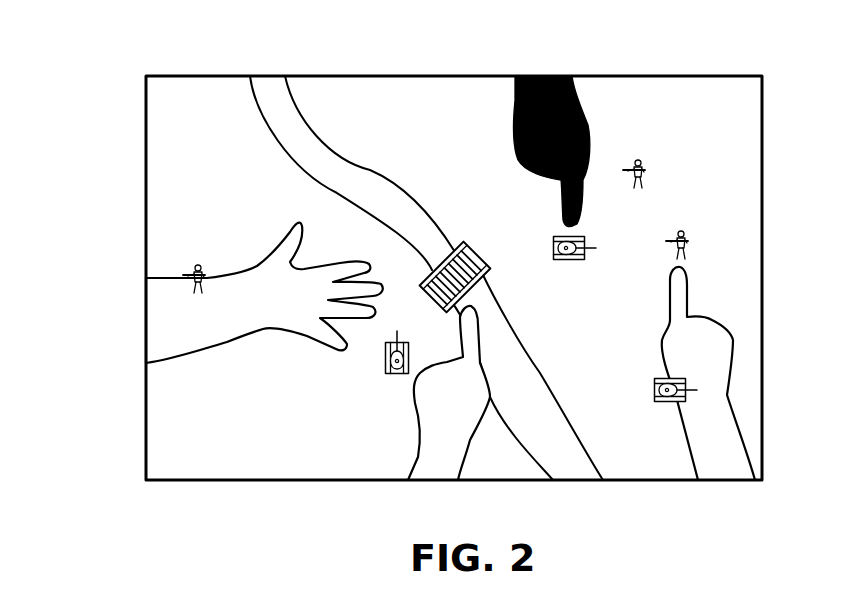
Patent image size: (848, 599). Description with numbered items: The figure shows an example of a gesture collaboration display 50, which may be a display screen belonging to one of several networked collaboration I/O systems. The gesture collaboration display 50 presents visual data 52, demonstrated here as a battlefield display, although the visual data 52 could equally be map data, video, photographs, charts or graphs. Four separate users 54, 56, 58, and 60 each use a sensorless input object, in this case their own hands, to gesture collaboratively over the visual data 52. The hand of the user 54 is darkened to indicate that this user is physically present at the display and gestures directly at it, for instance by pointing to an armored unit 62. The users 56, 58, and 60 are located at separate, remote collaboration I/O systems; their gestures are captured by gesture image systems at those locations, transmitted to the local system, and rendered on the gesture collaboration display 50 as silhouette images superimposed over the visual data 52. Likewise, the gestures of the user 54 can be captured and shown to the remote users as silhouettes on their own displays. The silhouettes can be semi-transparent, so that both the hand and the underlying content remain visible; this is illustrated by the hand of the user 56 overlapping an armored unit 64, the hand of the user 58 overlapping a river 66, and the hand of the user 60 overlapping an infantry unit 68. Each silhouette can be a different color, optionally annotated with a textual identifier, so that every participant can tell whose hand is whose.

The gesture collaboration display 50 is at (102, 54).
The visual data 52 is at (394, 120).
The user 54 is at (592, 127).
The user 56 is at (690, 440).
The user 58 is at (412, 452).
The user 60 is at (225, 343).
The armored unit 62 is at (572, 260).
The armored unit 64 is at (655, 380).
The river 66 is at (517, 338).
The infantry unit 68 is at (207, 260).